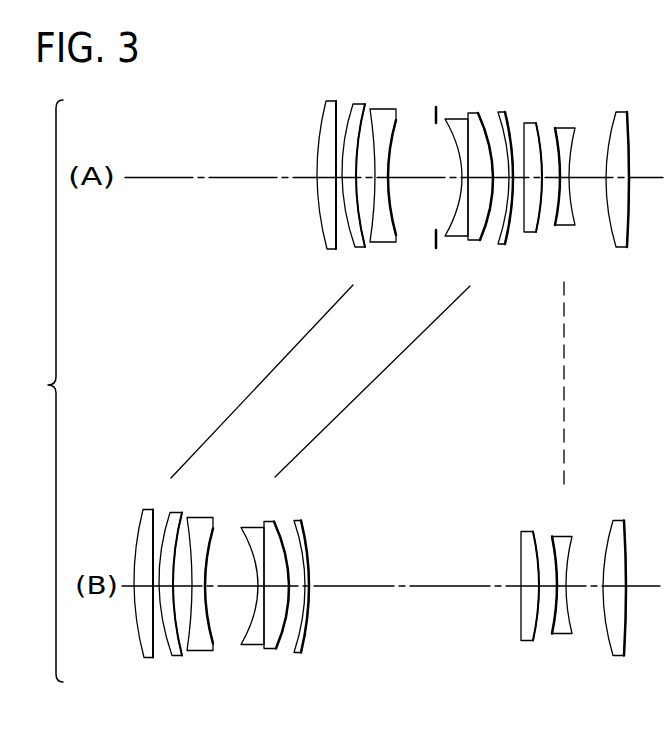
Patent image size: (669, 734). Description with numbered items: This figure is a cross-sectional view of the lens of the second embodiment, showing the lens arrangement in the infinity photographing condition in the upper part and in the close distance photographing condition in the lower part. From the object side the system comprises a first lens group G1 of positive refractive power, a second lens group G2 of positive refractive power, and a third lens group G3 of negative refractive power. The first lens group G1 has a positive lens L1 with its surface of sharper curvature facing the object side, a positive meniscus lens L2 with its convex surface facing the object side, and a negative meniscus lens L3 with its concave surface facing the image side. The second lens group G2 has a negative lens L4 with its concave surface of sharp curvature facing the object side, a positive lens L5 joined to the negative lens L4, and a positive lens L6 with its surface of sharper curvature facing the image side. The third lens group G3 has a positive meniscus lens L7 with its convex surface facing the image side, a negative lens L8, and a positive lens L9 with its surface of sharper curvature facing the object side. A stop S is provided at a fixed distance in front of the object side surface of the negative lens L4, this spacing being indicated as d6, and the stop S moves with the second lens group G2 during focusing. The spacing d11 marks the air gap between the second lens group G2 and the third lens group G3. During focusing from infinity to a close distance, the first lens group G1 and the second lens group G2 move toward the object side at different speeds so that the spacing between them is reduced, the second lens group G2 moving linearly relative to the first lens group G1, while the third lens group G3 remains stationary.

The first lens group G1 is at (388, 51).
The second lens group G2 is at (513, 51).
The third lens group G3 is at (647, 51).
The positive lens L1 is at (320, 110).
The positive meniscus lens L2 is at (355, 110).
The negative meniscus lens L3 is at (385, 112).
The negative lens L4 is at (452, 117).
The positive lens L5 is at (470, 113).
The positive lens L6 is at (500, 111).
The positive meniscus lens L7 is at (535, 123).
The negative lens L8 is at (570, 128).
The positive lens L9 is at (623, 112).
The stop S is at (435, 122).
The air gap between third lens and aperture stop d6 is at (428, 178).
The air gap between second and third lens groups d11 is at (517, 178).